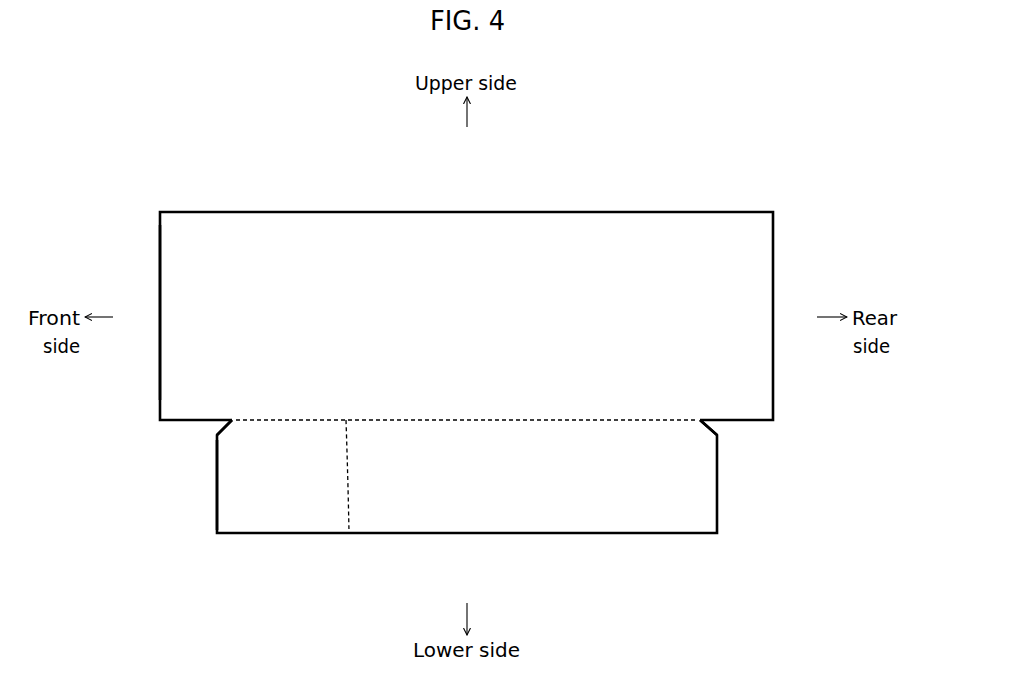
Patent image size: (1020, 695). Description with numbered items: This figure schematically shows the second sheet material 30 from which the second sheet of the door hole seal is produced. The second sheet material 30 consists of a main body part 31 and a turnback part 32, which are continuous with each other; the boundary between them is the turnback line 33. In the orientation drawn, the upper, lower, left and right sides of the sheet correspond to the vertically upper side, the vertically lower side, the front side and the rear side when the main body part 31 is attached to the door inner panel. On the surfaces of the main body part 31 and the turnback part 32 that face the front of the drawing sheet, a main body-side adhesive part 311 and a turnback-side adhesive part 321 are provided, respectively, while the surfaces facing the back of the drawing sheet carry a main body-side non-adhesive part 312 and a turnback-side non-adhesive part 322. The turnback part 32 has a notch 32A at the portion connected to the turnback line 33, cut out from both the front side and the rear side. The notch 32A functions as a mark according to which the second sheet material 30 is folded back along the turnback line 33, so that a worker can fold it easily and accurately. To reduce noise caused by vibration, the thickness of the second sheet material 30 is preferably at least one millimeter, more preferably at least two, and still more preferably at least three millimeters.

The second sheet material 30 is at (712, 167).
The main body part 31 is at (90, 217).
The main body-side adhesive part 311 is at (177, 248).
The main body-side non-adhesive part 312 is at (177, 270).
The turnback part 32 is at (150, 445).
The notch 32A is at (225, 427).
The turnback-side adhesive part 321 is at (235, 458).
The turnback-side non-adhesive part 322 is at (235, 483).
The turnback line 33 is at (348, 534).